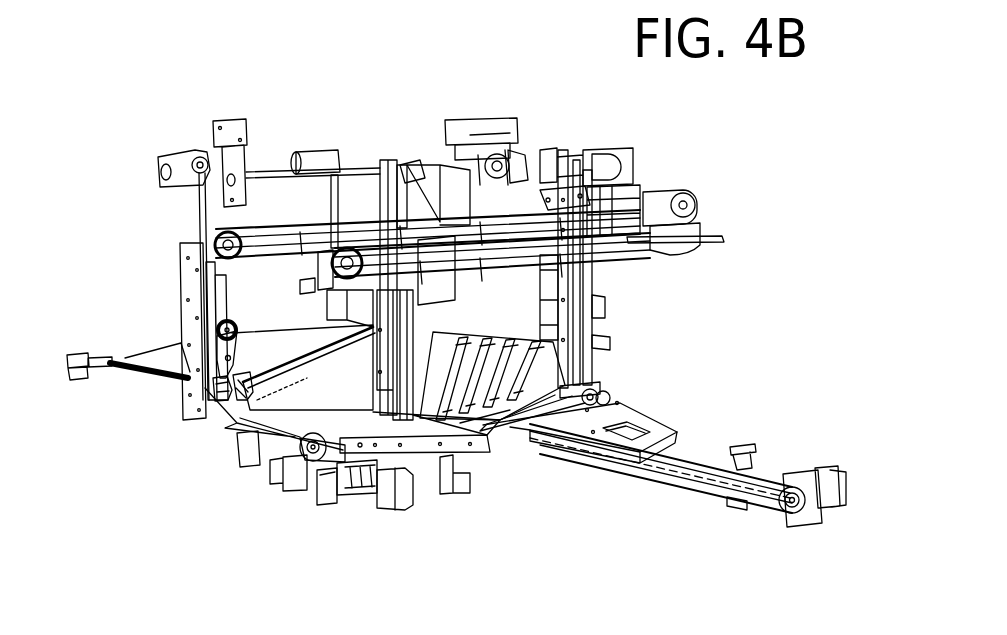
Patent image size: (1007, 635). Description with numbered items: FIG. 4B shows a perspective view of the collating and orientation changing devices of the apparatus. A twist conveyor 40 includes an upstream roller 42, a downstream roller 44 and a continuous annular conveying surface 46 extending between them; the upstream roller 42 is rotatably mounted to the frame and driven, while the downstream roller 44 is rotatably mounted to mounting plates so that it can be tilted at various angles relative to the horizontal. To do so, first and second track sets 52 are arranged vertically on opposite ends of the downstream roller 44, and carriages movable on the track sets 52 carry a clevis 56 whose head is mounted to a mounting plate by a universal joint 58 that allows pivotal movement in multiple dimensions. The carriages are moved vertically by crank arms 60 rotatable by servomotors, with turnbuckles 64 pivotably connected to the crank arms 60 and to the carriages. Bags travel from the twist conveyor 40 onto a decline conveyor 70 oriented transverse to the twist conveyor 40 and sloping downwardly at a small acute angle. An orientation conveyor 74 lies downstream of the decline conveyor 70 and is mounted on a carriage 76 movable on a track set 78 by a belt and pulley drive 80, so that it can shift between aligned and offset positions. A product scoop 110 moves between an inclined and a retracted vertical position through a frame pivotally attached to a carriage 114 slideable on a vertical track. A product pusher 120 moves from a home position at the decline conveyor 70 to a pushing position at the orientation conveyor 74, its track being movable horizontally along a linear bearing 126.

The twist conveyor 40 is at (143, 353).
The upstream roller 42 is at (103, 383).
The downstream roller 44 is at (240, 404).
The continuous annular conveying surface 46 is at (277, 346).
The track set 52 is at (182, 277).
The clevis 56 is at (213, 343).
The universal joint 58 is at (207, 417).
The crank arm 60 is at (177, 165).
The turnbuckle 64 is at (200, 200).
The decline conveyor 70 is at (273, 423).
The orientation conveyor 74 is at (583, 401).
The carriage 76 is at (625, 418).
The track set 78 is at (682, 447).
The belt and pulley drive 80 is at (820, 464).
The product scoop 110 is at (532, 340).
The carriage 114 is at (600, 275).
The product pusher 120 is at (408, 420).
The linear bearing 126 is at (520, 262).